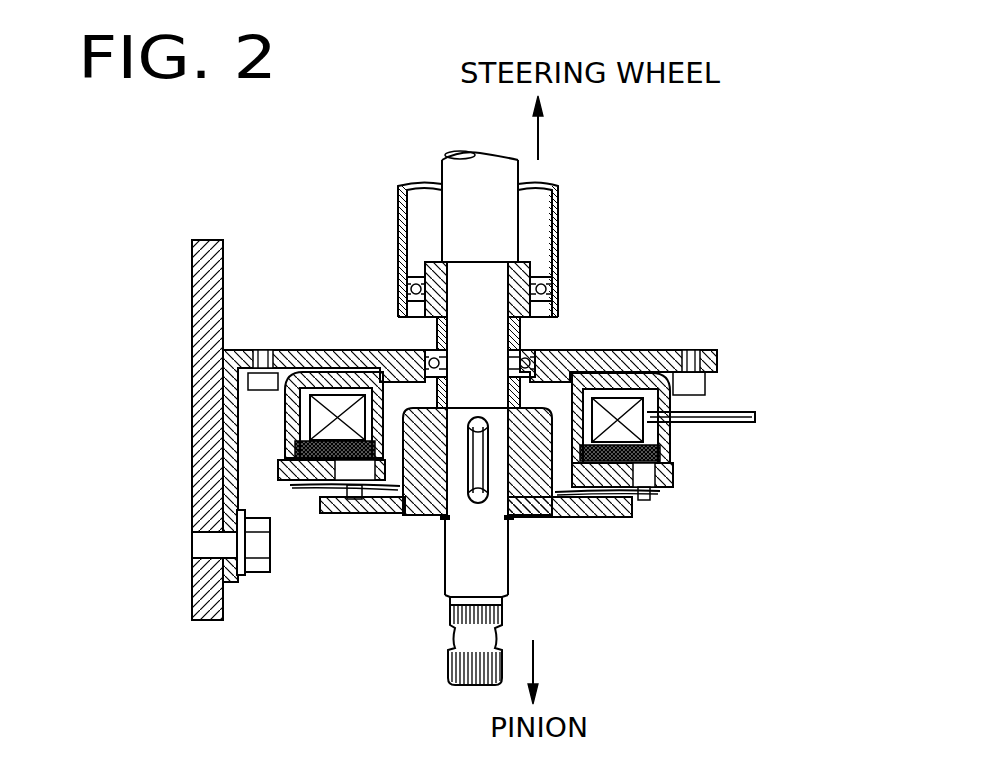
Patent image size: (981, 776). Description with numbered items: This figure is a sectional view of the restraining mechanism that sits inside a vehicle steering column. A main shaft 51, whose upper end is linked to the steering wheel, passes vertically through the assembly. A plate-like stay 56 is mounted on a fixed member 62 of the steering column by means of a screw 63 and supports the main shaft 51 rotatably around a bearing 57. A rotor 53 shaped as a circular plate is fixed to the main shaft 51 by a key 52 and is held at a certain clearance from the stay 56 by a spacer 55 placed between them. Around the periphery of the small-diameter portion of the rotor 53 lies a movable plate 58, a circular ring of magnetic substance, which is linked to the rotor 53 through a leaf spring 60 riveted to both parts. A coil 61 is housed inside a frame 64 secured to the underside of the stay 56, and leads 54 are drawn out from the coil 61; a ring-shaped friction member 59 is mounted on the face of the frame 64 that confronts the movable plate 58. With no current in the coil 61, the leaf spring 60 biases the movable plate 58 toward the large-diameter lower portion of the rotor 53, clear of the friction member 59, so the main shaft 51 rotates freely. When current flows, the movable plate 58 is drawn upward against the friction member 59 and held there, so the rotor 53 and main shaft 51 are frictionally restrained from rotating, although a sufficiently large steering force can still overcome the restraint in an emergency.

The main shaft 51 is at (495, 583).
The key 52 is at (472, 465).
The rotor 53 is at (565, 517).
The leads 54 is at (757, 409).
The spacer 55 is at (437, 327).
The stay 56 is at (637, 350).
The bearing 57 is at (527, 350).
The movable plate 58 is at (673, 476).
The friction member 59 is at (665, 455).
The leaf spring 60 is at (300, 490).
The coil 61 is at (318, 418).
The fixed member 62 is at (196, 468).
The screw 63 is at (268, 572).
The frame 64 is at (303, 350).